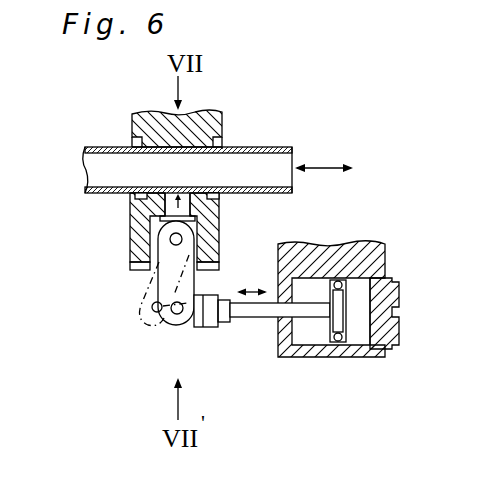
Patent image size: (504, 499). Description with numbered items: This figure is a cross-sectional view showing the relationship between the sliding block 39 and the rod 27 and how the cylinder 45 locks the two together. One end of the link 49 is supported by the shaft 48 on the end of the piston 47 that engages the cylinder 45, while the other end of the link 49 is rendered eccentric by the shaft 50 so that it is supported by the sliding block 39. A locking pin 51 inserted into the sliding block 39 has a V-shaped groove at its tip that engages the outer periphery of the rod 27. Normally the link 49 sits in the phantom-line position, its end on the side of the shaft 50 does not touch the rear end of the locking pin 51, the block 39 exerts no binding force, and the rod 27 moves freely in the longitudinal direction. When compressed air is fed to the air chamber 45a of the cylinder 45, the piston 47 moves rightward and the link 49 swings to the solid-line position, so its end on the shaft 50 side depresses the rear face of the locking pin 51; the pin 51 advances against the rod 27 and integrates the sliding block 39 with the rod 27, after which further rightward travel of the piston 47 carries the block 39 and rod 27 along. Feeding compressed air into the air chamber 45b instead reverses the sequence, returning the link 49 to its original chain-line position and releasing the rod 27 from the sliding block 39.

The rod 27 is at (288, 147).
The sliding block 39 is at (216, 112).
The cylinder 45 is at (357, 352).
The air chamber 45a is at (307, 338).
The air chamber 45b is at (362, 323).
The piston 47 is at (258, 312).
The shaft 48 is at (172, 314).
The link 49 is at (186, 328).
The shaft 50 is at (168, 238).
The locking pin 51 is at (167, 205).